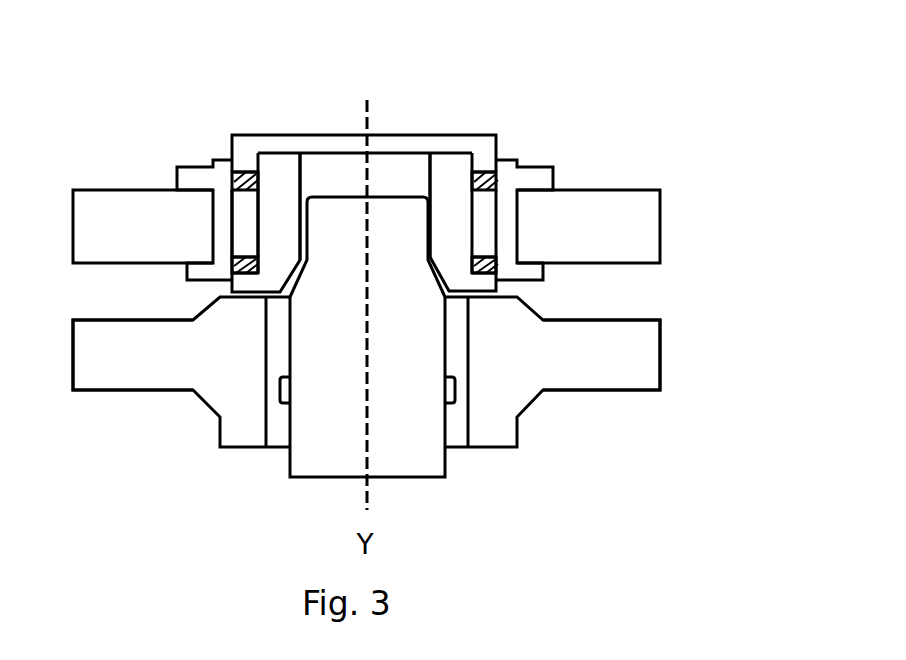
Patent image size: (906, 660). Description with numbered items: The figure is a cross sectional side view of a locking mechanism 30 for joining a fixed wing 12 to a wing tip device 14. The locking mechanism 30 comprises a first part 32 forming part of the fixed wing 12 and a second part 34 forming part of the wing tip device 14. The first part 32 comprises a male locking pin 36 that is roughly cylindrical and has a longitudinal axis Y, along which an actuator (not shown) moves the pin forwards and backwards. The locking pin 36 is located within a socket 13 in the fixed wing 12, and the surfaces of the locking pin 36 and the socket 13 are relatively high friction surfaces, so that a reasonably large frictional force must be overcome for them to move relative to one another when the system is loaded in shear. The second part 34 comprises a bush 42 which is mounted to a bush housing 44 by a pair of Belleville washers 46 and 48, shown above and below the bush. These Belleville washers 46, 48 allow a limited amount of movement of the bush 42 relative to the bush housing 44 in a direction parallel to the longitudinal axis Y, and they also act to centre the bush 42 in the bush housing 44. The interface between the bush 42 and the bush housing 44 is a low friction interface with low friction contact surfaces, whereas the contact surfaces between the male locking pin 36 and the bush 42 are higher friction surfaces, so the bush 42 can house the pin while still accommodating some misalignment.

The fixed wing 12 is at (502, 388).
The socket 13 is at (280, 407).
The wing tip device 14 is at (647, 245).
The locking mechanism 30 is at (492, 112).
The first part 32 is at (468, 488).
The second part 34 is at (568, 162).
The male locking pin 36 is at (335, 433).
The bush 42 is at (278, 188).
The bush housing 44 is at (240, 217).
The Belleville washer 46 is at (246, 178).
The Belleville washer 48 is at (230, 277).